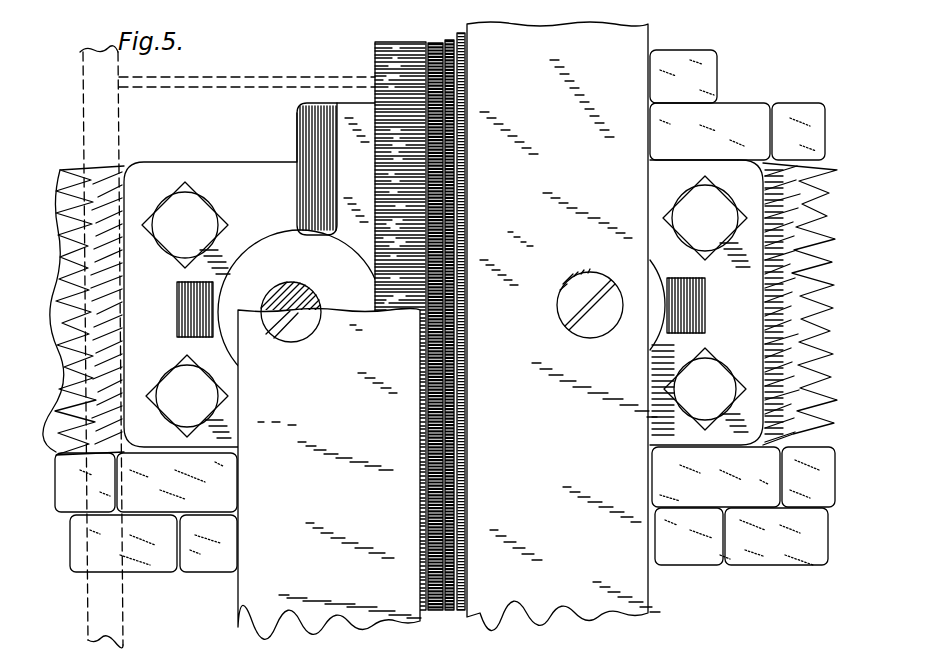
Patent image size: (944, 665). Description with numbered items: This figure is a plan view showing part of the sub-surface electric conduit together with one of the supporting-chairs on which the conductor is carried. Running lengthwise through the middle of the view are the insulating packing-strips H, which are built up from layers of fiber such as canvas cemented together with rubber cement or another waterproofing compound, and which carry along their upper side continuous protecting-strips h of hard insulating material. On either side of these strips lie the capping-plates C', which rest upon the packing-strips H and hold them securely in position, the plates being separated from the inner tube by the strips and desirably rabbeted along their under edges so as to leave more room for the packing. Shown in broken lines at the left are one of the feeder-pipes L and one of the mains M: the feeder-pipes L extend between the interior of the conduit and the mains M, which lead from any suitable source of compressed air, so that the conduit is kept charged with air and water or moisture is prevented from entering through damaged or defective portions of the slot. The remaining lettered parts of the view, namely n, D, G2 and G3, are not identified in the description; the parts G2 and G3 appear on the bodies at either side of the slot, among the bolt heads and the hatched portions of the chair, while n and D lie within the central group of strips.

The feeder-pipes L is at (238, 84).
The mains M is at (91, 616).
The protecting-strips h is at (400, 326).
The thin strip n is at (468, 122).
The packing-strips H is at (470, 212).
The strip D is at (448, 338).
The side block with bolt heads G2 is at (440, 279).
The hatched bearing block G3 is at (269, 240).
The capping-plates C' is at (449, 330).